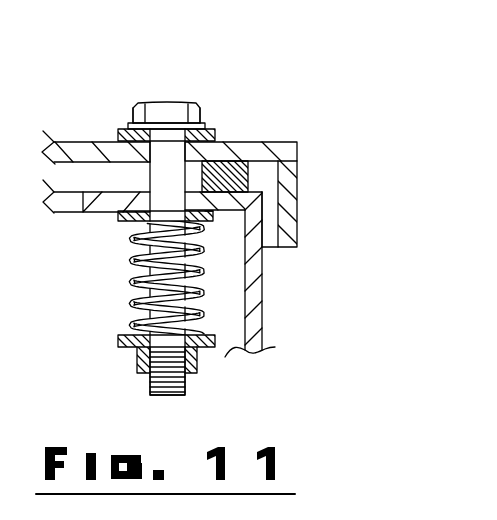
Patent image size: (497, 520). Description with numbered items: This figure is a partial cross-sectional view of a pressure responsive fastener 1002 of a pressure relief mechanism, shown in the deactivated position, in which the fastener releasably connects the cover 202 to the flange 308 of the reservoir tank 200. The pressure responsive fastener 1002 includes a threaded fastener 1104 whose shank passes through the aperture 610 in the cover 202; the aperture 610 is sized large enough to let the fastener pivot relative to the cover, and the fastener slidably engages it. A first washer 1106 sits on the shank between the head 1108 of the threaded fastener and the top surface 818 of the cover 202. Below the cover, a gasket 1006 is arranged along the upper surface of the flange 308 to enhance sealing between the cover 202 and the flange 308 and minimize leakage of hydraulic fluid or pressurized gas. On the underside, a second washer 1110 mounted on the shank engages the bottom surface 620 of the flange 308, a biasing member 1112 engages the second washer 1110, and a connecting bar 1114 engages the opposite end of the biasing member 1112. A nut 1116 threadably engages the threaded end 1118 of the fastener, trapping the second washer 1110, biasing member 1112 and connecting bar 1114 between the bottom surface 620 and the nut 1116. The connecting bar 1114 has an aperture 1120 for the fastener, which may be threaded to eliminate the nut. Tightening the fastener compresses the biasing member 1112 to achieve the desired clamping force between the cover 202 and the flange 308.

The pressure responsive fastener 1002 is at (176, 88).
The threaded fastener 1104 is at (200, 112).
The first washer 1106 is at (216, 140).
The head 1108 is at (133, 113).
The second washer 1110 is at (205, 213).
The biasing member 1112 is at (137, 315).
The connecting bar 1114 is at (118, 338).
The nut 1116 is at (198, 361).
The threaded end 1118 is at (148, 382).
The aperture 1120 is at (165, 350).
The cover 202 is at (60, 142).
The flange 308 is at (107, 213).
The aperture 610 is at (150, 146).
The bottom surface 620 is at (110, 221).
The top surface 818 is at (260, 142).
The gasket 1006 is at (250, 176).
The reservoir tank 200 is at (264, 300).